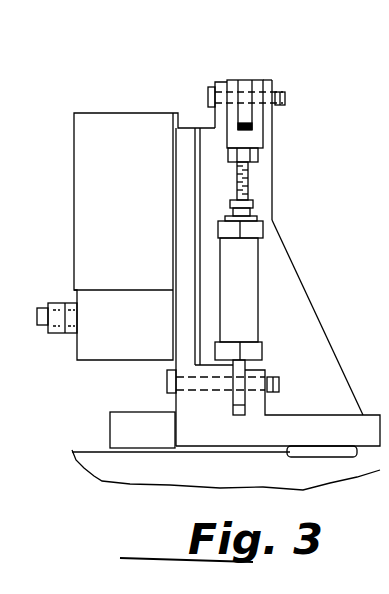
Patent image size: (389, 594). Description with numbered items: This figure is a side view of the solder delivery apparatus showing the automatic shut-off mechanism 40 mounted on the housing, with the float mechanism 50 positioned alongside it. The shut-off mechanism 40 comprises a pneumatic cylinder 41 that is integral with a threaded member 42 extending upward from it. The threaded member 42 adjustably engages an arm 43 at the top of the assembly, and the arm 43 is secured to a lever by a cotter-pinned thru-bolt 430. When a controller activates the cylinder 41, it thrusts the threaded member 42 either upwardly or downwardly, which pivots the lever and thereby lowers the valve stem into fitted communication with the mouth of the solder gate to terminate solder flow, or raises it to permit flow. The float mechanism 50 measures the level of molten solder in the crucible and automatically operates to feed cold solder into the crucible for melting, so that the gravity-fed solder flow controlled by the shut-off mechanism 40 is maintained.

The shut-off mechanism 40 is at (293, 219).
The pneumatic cylinder 41 is at (248, 287).
The threaded member 42 is at (248, 173).
The arm 43 is at (257, 98).
The cotter-pinned thru-bolt 430 is at (288, 98).
The float mechanism 50 is at (68, 211).